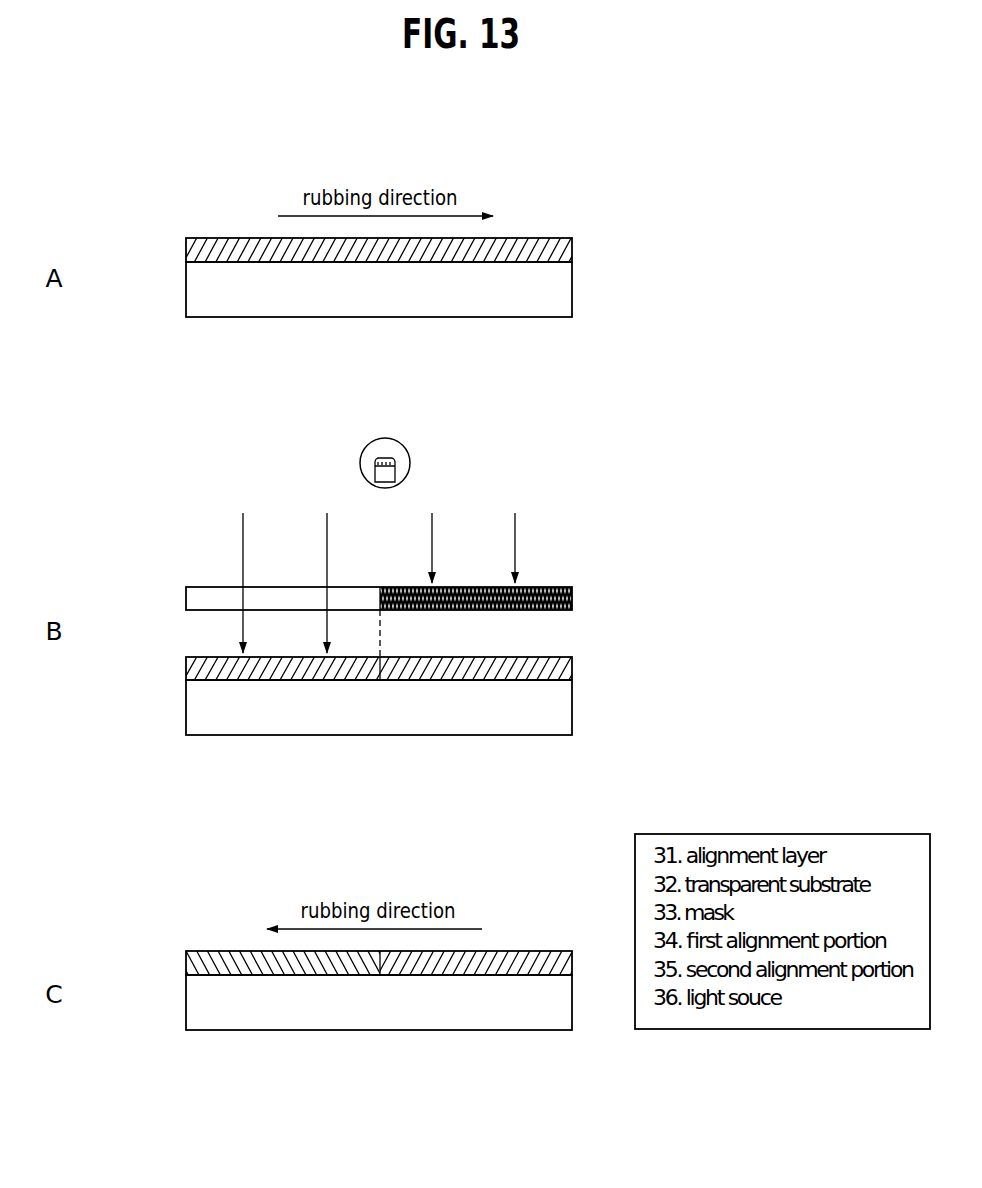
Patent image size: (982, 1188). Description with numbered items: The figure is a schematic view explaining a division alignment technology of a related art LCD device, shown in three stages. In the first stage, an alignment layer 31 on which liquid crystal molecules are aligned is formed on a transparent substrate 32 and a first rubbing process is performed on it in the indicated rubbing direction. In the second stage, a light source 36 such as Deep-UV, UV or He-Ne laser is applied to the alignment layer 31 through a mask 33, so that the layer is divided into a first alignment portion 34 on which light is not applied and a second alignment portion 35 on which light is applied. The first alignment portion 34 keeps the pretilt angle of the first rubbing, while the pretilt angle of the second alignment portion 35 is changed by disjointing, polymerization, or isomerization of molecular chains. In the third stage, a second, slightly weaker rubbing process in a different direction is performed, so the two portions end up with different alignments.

The alignment layer 31 is at (572, 247).
The transparent substrate 32 is at (570, 291).
The mask 33 is at (572, 596).
The first alignment portion 34 is at (572, 668).
The second alignment portion 35 is at (188, 665).
The light source 36 is at (410, 460).